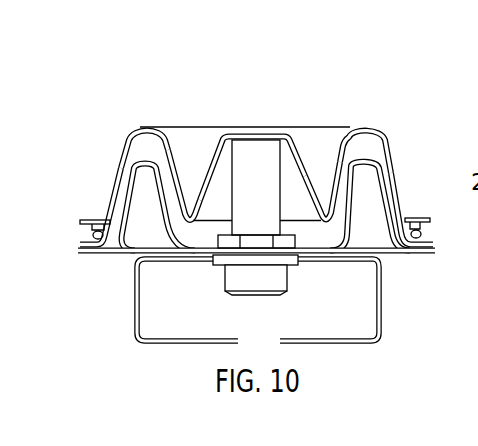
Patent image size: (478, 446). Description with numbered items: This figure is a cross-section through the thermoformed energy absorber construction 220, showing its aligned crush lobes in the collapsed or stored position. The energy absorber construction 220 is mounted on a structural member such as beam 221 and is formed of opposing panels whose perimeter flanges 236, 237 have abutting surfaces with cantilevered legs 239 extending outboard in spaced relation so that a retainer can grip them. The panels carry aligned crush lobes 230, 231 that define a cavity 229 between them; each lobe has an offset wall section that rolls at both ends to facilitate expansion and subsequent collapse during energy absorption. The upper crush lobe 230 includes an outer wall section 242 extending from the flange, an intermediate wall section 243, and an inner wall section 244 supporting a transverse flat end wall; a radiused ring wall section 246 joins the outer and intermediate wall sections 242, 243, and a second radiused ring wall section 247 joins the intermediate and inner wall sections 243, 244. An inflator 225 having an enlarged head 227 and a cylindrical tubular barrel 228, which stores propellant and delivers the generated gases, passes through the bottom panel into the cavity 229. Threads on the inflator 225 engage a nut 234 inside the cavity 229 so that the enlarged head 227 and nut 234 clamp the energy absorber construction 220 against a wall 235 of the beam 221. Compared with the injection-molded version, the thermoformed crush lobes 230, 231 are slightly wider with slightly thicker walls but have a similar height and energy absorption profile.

The energy absorber construction 220 is at (140, 94).
The beam 221 is at (383, 306).
The inflator 225 is at (214, 285).
The enlarged head 227 is at (278, 283).
The cylindrical tubular barrel 228 is at (271, 193).
The cavity 229 is at (302, 225).
The crush lobe 230 is at (365, 111).
The crush lobe 231 is at (405, 204).
The nut 234 is at (298, 244).
The wall 235 is at (197, 260).
The perimeter flange 236 is at (97, 220).
The perimeter flange 237 is at (99, 254).
The cantilevered legs 239 is at (82, 240).
The outer wall section 242 is at (113, 193).
The intermediate wall section 243 is at (170, 154).
The inner wall section 244 is at (210, 151).
The radiused ring wall section 246 is at (141, 128).
The radiused ring wall section 247 is at (333, 190).